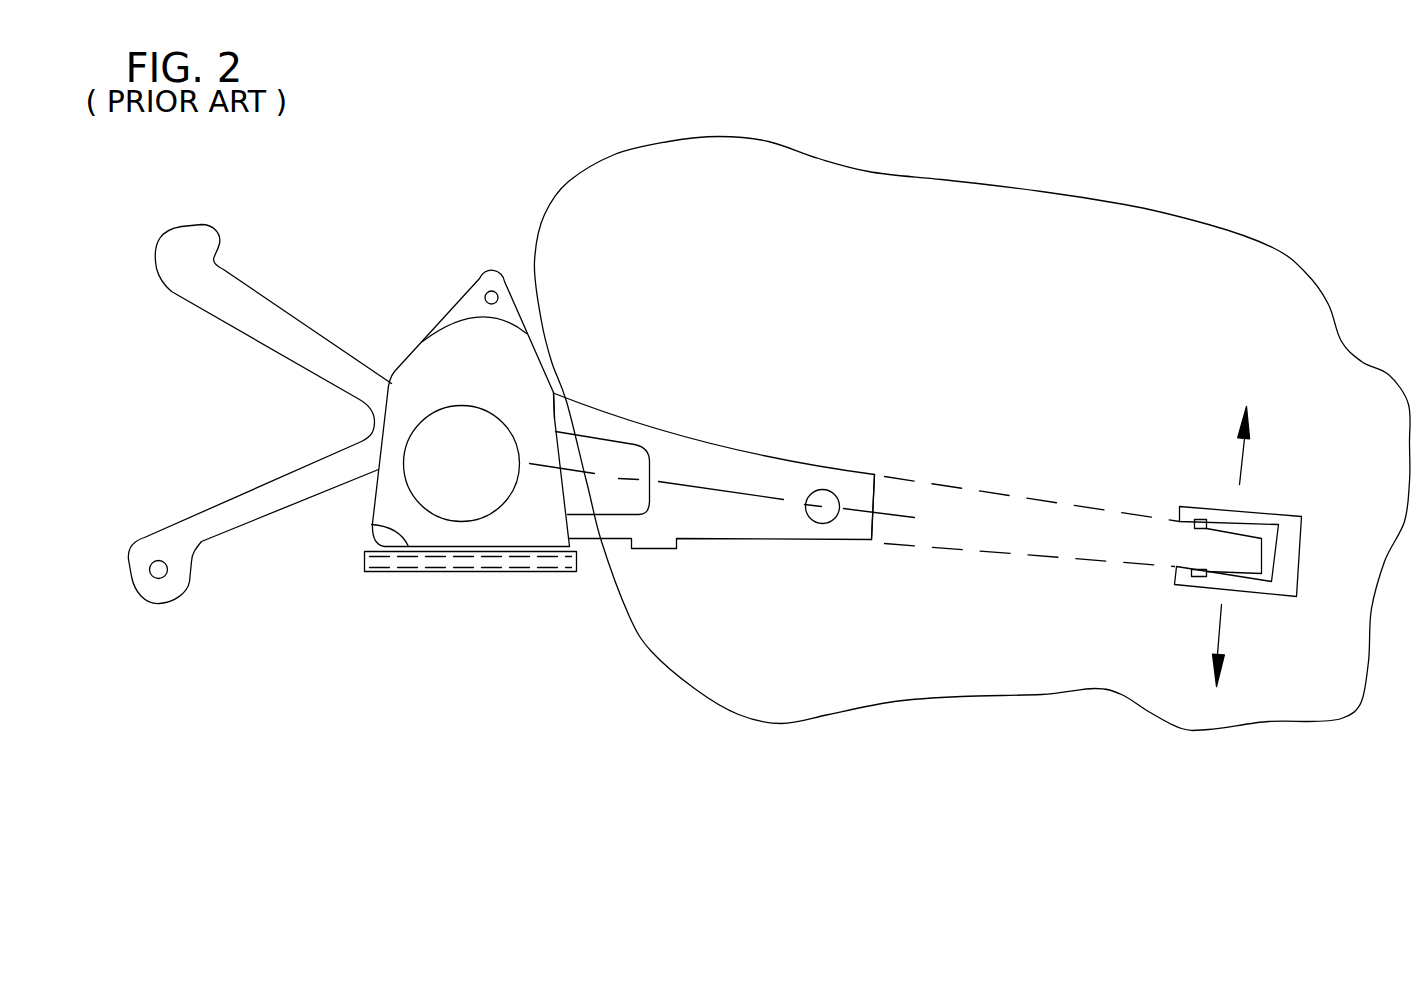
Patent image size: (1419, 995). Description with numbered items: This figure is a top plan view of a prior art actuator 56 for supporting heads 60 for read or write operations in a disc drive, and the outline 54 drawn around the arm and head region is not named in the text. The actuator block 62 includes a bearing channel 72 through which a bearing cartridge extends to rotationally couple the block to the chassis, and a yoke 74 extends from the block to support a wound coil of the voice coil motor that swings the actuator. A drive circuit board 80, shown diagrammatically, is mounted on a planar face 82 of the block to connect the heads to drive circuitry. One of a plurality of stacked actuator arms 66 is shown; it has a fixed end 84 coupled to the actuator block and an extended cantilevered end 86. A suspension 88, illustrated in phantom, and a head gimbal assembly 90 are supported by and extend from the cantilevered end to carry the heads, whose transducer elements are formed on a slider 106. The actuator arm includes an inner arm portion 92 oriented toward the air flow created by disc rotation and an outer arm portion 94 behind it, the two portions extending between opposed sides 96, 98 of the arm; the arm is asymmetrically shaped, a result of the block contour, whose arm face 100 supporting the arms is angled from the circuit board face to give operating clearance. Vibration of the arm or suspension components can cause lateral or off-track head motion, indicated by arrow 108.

The housing / enclosure 54 is at (869, 350).
The actuator 56 is at (675, 425).
The heads 60 is at (1250, 508).
The actuator block 62 is at (522, 360).
The actuator arm 66 is at (690, 520).
The bearing channel 72 is at (472, 500).
The yoke 74 is at (248, 298).
The drive circuit board 80 is at (570, 570).
The face 82 is at (368, 525).
The fixed end 84 is at (557, 392).
The cantilevered end 86 is at (863, 470).
The suspension 88 is at (1065, 510).
The head gimbal assembly 90 is at (1277, 515).
The inner arm portion 92 is at (713, 447).
The outer arm portion 94 is at (760, 498).
The side 96 is at (798, 460).
The side 98 is at (823, 540).
The arm face 100 is at (560, 447).
The slider 106 is at (1217, 523).
The arrow 108 is at (1217, 622).